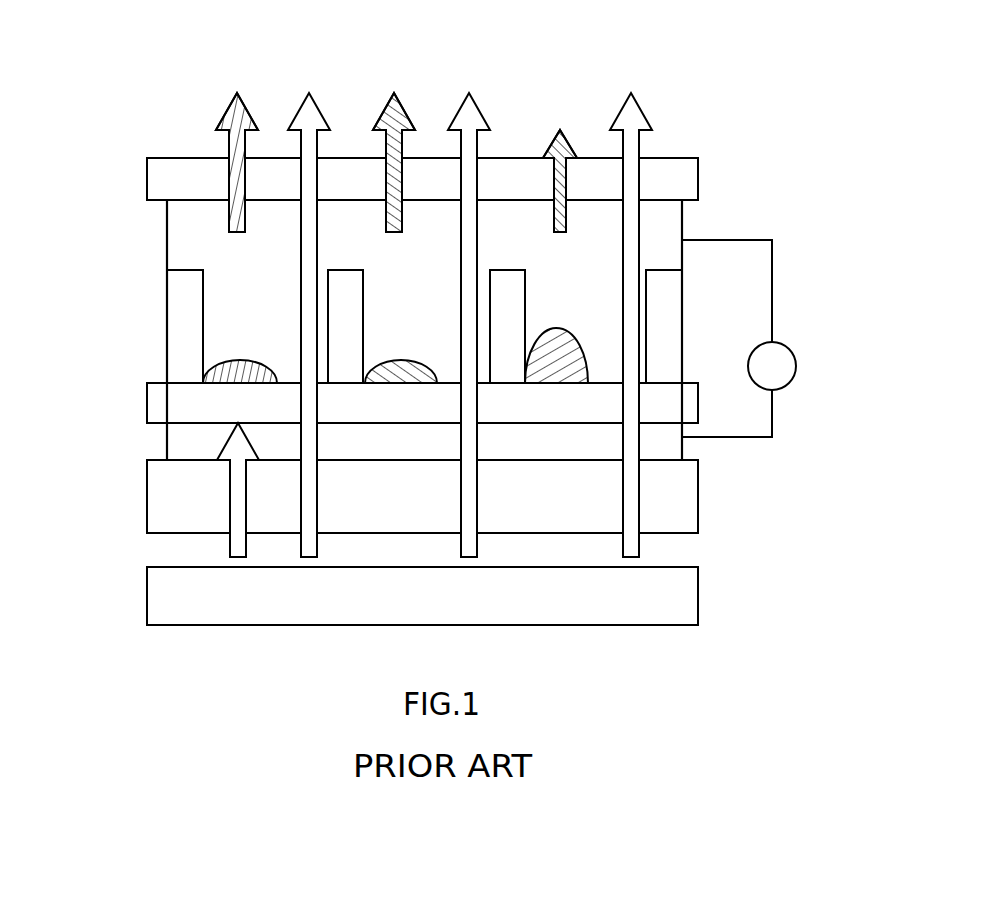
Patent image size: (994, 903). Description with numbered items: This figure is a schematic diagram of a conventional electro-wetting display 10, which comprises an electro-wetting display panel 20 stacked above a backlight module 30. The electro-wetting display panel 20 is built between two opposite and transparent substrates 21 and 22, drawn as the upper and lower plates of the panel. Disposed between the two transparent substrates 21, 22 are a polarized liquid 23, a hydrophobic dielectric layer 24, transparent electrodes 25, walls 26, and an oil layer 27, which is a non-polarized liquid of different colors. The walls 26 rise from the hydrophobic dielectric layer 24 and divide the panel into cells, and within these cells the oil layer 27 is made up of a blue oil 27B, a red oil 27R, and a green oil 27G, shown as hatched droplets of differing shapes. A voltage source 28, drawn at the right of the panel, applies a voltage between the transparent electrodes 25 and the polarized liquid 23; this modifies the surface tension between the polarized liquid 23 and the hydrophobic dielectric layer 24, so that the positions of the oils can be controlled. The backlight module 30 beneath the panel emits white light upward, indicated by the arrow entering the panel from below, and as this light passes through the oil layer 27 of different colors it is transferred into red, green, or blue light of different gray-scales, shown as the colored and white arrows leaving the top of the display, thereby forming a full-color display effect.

The electro-wetting display 10 is at (434, 319).
The electro-wetting display panel 20 is at (353, 345).
The transparent substrate 21 is at (162, 179).
The transparent substrate 22 is at (170, 493).
The polarized liquid 23 is at (183, 243).
The hydrophobic dielectric layer 24 is at (170, 403).
The transparent electrodes 25 is at (195, 444).
The walls 26 is at (185, 322).
The oil layer 27 is at (410, 327).
The blue oil 27B is at (238, 358).
The red oil 27R is at (399, 358).
The green oil 27G is at (567, 330).
The voltage source 28 is at (788, 346).
The backlight module 30 is at (170, 597).